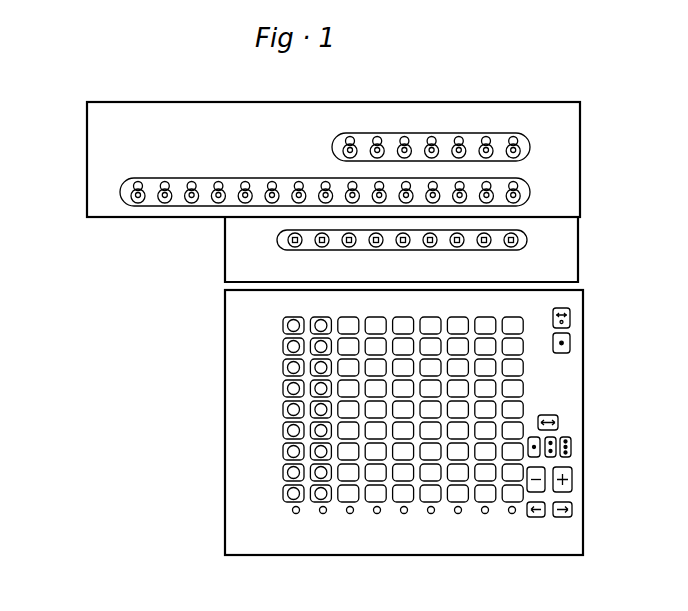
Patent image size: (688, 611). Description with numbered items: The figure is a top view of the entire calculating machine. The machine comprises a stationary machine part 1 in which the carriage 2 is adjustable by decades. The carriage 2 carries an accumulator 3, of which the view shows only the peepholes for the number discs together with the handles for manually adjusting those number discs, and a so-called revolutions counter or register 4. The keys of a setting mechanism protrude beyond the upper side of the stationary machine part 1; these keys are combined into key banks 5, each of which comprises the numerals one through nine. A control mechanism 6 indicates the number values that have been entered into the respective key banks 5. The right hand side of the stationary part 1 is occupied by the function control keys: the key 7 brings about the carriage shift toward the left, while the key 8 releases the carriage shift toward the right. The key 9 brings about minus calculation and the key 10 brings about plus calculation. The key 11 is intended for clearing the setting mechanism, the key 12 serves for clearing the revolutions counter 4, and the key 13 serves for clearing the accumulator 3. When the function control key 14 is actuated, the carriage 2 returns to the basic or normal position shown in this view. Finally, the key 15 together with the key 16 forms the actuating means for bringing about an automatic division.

The stationary machine part 1 is at (253, 412).
The carriage 2 is at (110, 120).
The accumulator 3 is at (531, 192).
The revolutions counter 4 is at (530, 147).
The key banks 5 is at (350, 499).
The control mechanism 6 is at (527, 240).
The key 7 is at (540, 518).
The key 8 is at (565, 518).
The key 9 is at (530, 486).
The key 10 is at (573, 480).
The key 11 is at (572, 447).
The key 12 is at (552, 436).
The key 13 is at (532, 436).
The function control key 14 is at (551, 416).
The key 15 is at (571, 344).
The key 16 is at (571, 318).